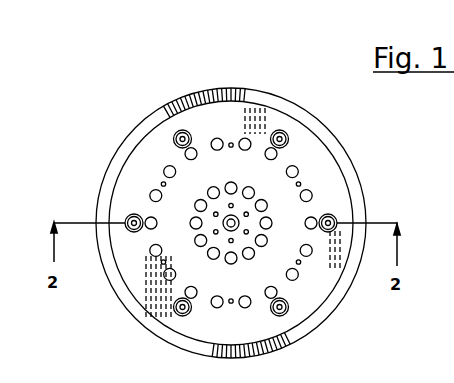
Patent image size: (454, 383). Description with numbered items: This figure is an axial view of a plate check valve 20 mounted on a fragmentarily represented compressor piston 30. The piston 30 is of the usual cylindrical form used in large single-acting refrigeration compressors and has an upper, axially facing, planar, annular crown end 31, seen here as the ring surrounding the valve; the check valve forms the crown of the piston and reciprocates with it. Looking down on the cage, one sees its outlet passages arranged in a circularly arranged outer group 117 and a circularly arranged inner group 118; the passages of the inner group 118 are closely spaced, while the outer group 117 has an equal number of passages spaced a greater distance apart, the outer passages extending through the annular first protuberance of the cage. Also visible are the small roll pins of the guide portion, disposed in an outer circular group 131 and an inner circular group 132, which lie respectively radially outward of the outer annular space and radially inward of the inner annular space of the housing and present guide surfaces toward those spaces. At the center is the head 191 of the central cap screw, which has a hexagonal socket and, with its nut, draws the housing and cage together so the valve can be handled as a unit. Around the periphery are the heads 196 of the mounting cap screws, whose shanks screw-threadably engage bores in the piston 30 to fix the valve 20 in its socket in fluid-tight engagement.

The plate check valve 20 is at (232, 100).
The piston 30 is at (325, 110).
The crown end 31 is at (323, 315).
The outer group of outlet passages 117 is at (158, 155).
The inner group of outlet passages 118 is at (256, 172).
The head 196 is at (327, 214).
The head 191 is at (239, 223).
The inner circular group of pins 132 is at (214, 216).
The outer circular group of pins 131 is at (296, 263).